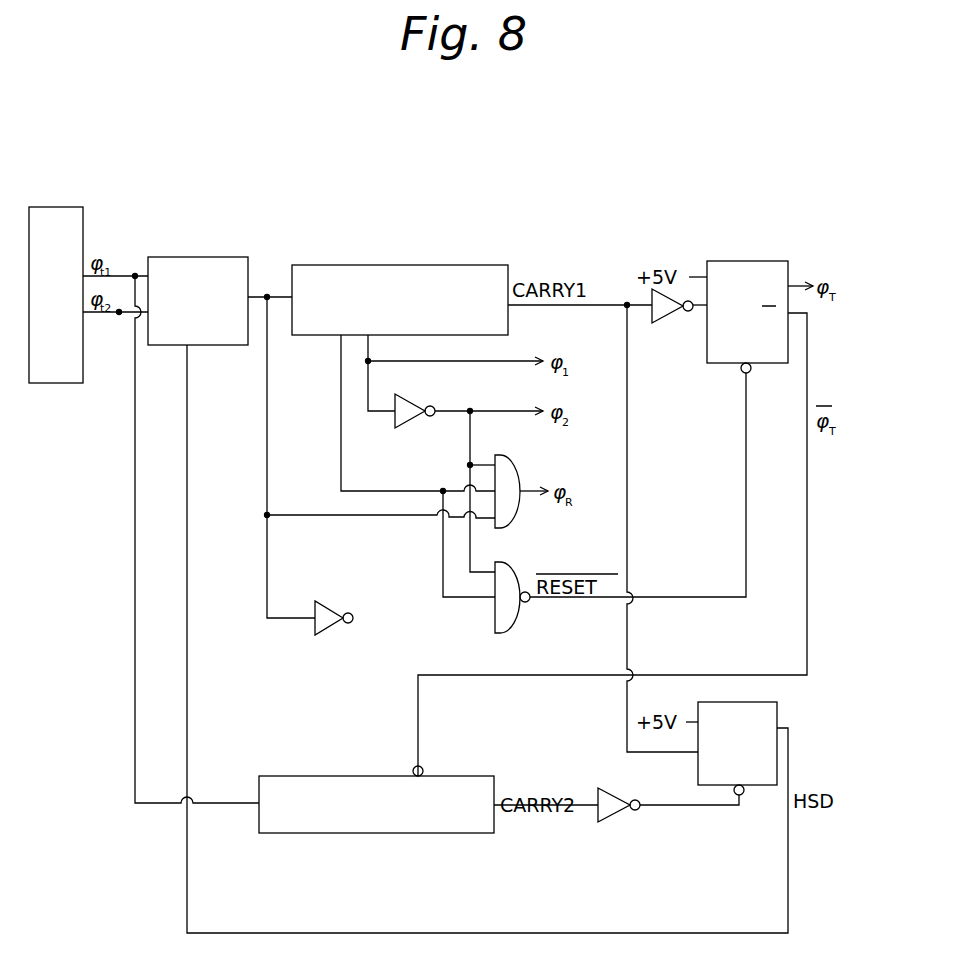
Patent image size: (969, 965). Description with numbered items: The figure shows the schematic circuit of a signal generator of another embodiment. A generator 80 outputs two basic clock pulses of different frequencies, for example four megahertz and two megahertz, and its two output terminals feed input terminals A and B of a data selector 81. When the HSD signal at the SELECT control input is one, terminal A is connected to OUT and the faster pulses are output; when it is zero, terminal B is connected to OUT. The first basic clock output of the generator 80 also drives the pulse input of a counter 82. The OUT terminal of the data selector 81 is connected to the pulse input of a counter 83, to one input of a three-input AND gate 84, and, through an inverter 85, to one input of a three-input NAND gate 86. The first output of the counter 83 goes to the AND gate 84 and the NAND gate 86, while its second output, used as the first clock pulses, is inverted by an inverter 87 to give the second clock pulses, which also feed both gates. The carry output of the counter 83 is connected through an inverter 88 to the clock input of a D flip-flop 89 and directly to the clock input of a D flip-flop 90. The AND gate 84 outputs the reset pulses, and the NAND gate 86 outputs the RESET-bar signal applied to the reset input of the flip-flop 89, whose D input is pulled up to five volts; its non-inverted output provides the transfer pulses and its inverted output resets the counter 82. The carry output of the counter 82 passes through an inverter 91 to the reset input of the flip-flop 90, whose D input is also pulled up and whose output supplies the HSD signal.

The generator 80 is at (64, 207).
The data selector 81 is at (201, 257).
The counter 82 is at (316, 776).
The counter 83 is at (453, 265).
The three-inputs AND gate 84 is at (516, 470).
The inverter 85 is at (330, 604).
The three-inputs NAND gate 86 is at (515, 626).
The inverter 87 is at (408, 398).
The inverter 88 is at (666, 322).
The D flip-flop 89 is at (776, 261).
The D flip-flop 90 is at (780, 706).
The inverter 91 is at (615, 820).